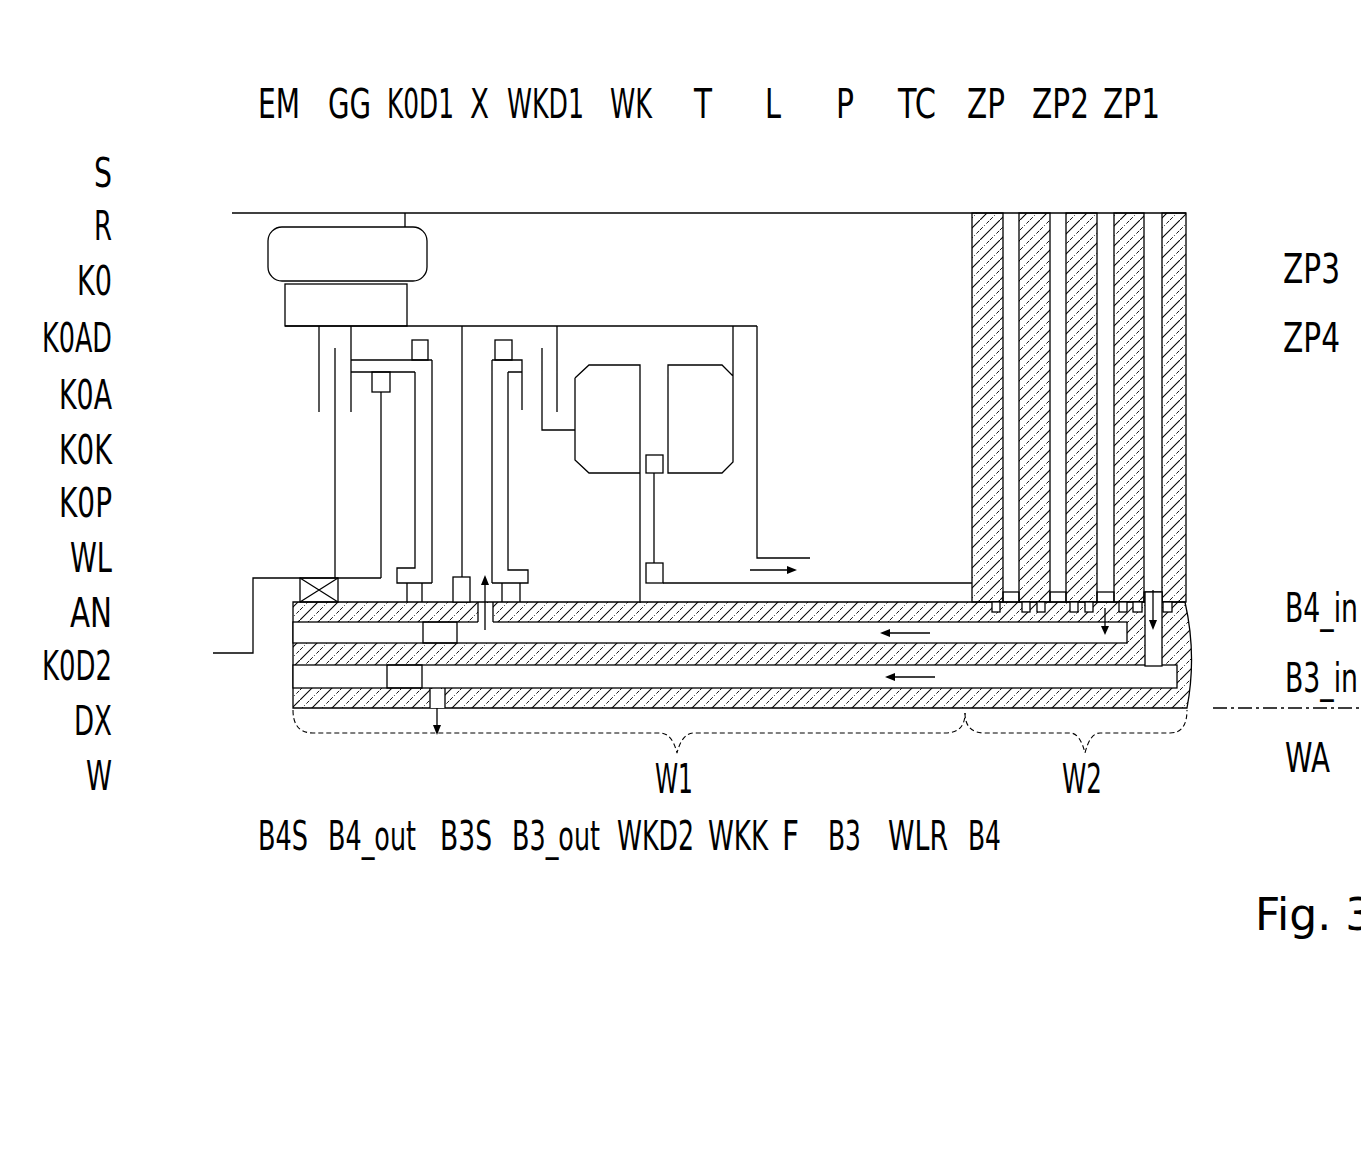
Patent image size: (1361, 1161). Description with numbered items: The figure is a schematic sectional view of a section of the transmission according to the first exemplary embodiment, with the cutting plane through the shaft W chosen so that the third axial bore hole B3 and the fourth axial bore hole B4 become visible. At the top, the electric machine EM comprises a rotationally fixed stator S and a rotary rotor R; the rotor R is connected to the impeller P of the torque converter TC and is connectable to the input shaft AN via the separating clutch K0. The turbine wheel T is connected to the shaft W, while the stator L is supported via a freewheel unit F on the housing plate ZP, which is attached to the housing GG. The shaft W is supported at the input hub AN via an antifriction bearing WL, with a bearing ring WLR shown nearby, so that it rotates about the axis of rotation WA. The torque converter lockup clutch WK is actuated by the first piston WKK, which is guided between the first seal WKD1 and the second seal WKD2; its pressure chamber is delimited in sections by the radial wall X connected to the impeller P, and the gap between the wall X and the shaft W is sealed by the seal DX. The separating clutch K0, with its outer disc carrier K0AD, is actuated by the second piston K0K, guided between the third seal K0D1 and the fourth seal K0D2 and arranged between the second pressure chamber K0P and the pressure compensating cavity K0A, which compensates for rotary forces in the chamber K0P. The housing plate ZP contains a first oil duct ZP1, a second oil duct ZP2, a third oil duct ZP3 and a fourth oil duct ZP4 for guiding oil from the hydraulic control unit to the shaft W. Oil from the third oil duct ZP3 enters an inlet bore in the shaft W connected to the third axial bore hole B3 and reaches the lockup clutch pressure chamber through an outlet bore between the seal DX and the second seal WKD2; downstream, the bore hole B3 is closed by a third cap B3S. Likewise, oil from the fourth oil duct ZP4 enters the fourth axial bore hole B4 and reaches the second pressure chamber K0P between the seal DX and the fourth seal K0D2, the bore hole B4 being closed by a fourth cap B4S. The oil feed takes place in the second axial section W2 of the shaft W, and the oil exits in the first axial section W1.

The electric machine EM is at (305, 205).
The housing GG is at (367, 212).
The stator S is at (283, 253).
The rotor R is at (300, 307).
The separating clutch K0 is at (300, 362).
The K0 outer disc carrier K0AD is at (372, 382).
The pressure compensating cavity K0A is at (395, 428).
The second piston K0K is at (423, 460).
The second pressure chamber K0P is at (443, 517).
The third seal K0D1 is at (420, 340).
The fourth seal K0D2 is at (412, 593).
The radial wall X is at (462, 400).
The first seal WKD1 is at (508, 340).
The torque converter lockup clutch WK is at (555, 318).
The first piston WKK is at (500, 495).
The second seal WKD2 is at (514, 593).
The turbine wheel T is at (610, 375).
The stator L is at (652, 455).
The freewheel unit F is at (665, 580).
The impeller P is at (710, 380).
The torque converter TC is at (778, 392).
The antifriction bearing WL is at (335, 548).
The bearing ring WLR is at (835, 590).
The input shaft AN is at (235, 628).
The seal DX is at (462, 595).
The shaft W is at (355, 662).
The first axial section W1 is at (629, 731).
The second axial section W2 is at (1076, 731).
The axis of rotation WA is at (1212, 712).
The housing plate ZP is at (982, 232).
The first oil duct ZP1 is at (1057, 225).
The second oil duct ZP2 is at (1010, 230).
The third oil duct ZP3 is at (1105, 275).
The fourth oil duct ZP4 is at (1153, 335).
The third axial bore hole B3 is at (800, 632).
The fourth axial bore hole B4 is at (1000, 682).
The third cap B3S is at (483, 640).
The fourth cap B4S is at (437, 604).